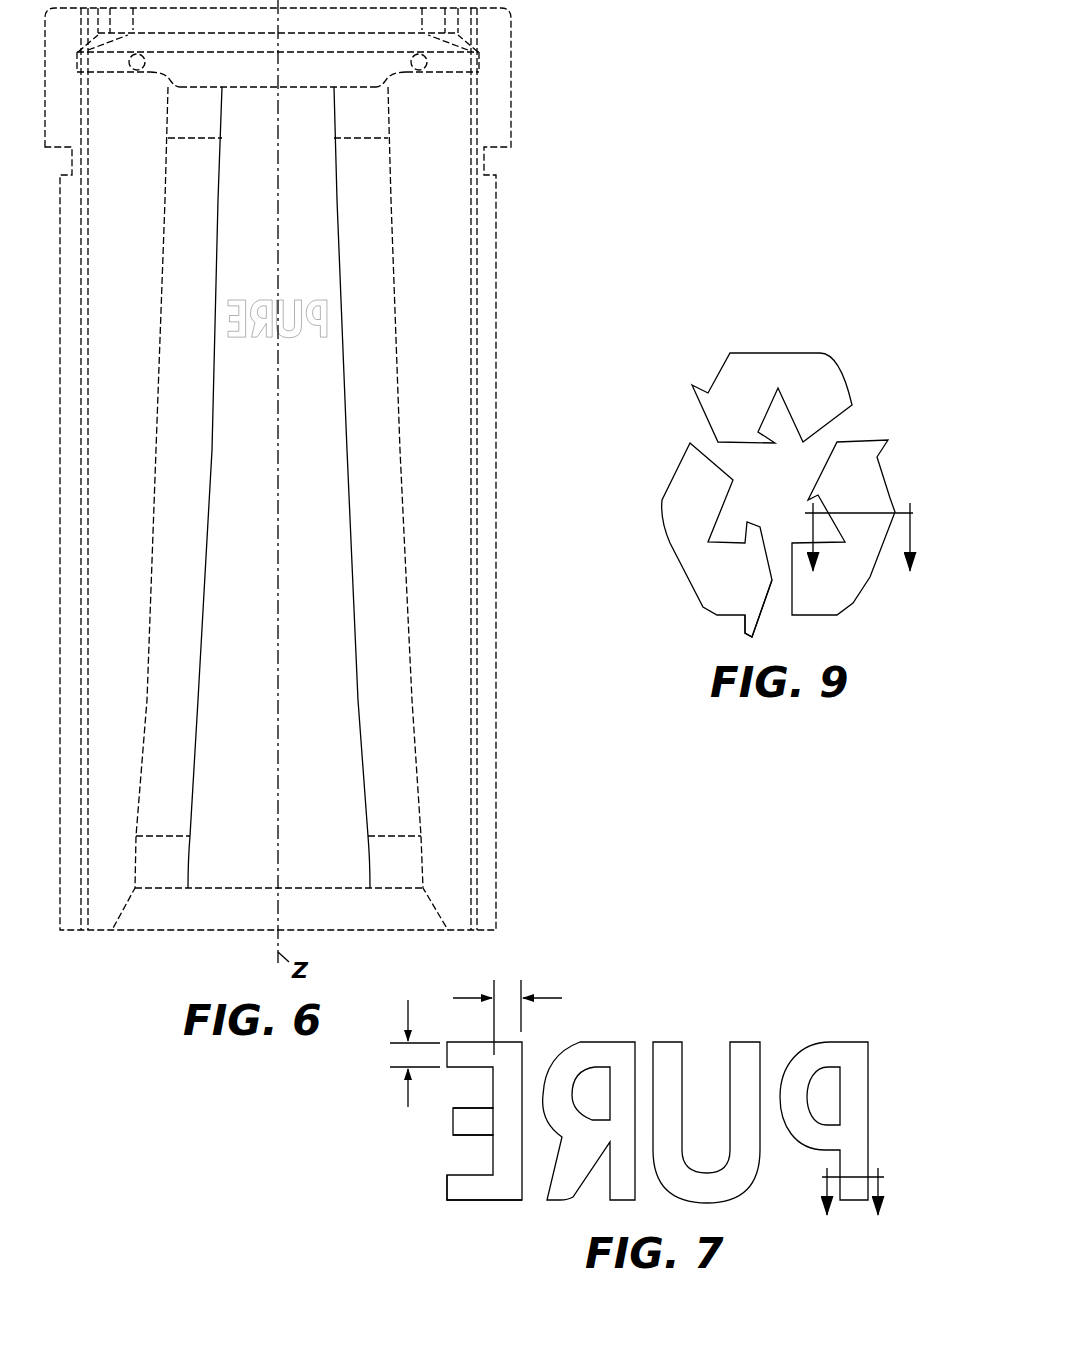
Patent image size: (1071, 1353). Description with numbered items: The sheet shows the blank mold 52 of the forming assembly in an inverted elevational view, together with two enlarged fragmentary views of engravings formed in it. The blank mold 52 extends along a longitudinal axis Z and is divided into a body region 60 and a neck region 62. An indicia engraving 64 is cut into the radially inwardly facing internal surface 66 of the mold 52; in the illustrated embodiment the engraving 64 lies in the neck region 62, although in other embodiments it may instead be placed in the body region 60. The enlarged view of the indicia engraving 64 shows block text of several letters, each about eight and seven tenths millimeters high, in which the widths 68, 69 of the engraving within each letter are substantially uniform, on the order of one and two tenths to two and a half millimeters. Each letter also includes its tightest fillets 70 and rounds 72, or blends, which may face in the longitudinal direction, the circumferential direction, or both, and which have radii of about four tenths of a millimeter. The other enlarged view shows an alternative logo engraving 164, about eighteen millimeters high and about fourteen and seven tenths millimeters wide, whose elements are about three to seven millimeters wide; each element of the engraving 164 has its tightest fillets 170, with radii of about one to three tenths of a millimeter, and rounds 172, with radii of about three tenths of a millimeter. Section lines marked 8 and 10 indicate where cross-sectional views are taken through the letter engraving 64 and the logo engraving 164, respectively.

In FIG. 6, the blank mold 52 is at (604, 80).
In FIG. 6, the body region 60 is at (382, 752).
In FIG. 6, the neck region 62 is at (354, 312).
In FIG. 6, the indicia engraving 64 is at (236, 290).
In FIG. 7, the indicia engraving 64 is at (742, 970).
In FIG. 6, the internal surface 66 is at (322, 386).
In FIG. 7, the width of the engraving 68 is at (408, 1092).
In FIG. 7, the width of the engraving 69 is at (556, 997).
In FIG. 7, the fillets 70 is at (490, 1138).
In FIG. 7, the rounds 72 is at (445, 1203).
In FIG. 9, the logo engraving 164 is at (740, 321).
In FIG. 9, the fillets 170 is at (701, 547).
In FIG. 9, the rounds 172 is at (746, 637).
In FIG. 9, the section line 10- 10 is at (864, 558).
In FIG. 7, the section line 8- 8 is at (854, 1223).